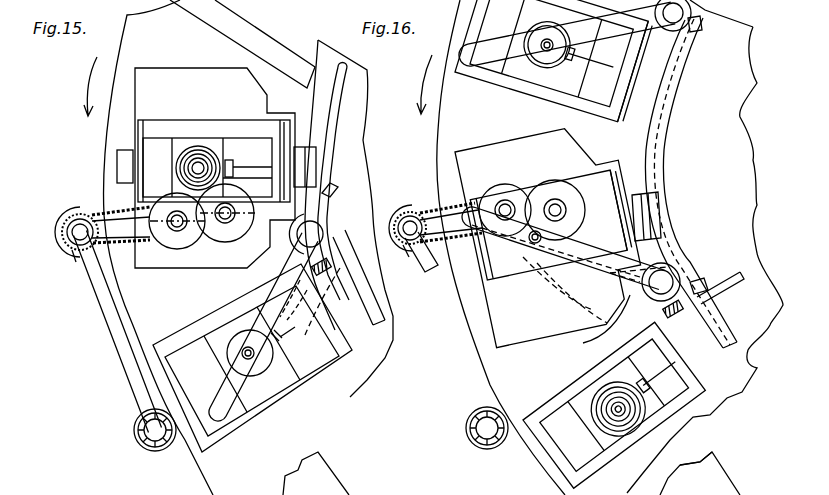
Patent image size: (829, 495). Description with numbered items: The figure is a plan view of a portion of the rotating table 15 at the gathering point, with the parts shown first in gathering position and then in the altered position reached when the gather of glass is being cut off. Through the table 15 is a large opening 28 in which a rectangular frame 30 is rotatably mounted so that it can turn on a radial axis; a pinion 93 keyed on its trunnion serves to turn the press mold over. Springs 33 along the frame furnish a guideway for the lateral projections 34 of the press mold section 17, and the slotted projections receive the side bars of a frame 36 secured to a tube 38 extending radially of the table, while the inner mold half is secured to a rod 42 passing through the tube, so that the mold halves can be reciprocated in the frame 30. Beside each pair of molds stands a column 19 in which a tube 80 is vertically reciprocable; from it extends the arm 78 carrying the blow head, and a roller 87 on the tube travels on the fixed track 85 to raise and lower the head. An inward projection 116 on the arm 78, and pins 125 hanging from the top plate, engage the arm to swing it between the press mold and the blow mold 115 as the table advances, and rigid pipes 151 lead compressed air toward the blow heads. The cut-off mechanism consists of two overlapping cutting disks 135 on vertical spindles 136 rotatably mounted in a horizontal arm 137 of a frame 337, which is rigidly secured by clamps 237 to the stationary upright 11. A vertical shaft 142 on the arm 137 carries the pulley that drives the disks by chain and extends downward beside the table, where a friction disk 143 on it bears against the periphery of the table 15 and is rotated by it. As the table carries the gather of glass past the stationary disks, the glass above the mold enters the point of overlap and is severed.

In FIG. 15, the rigid upright 11 is at (144, 423).
In FIG. 16, the rigid upright 11 is at (470, 422).
In FIG. 15, the table 15 is at (130, 322).
In FIG. 16, the table 15 is at (480, 352).
In FIG. 15, the press mold section 17 is at (218, 150).
In FIG. 16, the column 19 is at (683, 58).
In FIG. 15, the opening 28 is at (165, 75).
In FIG. 16, the opening 28 is at (524, 335).
In FIG. 15, the rectangular frame 30 is at (207, 120).
In FIG. 16, the rectangular frame 30 is at (515, 287).
In FIG. 16, the springs 33 is at (672, 487).
In FIG. 15, the lateral projections 34 is at (210, 150).
In FIG. 16, the lateral projections 34 is at (555, 72).
In FIG. 15, the frame 36 is at (279, 140).
In FIG. 16, the frame 36 is at (608, 195).
In FIG. 15, the tube 38 is at (247, 180).
In FIG. 15, the rod 42 is at (246, 166).
In FIG. 16, the rod 42 is at (592, 65).
In FIG. 15, the arm 78 is at (250, 422).
In FIG. 16, the arm 78 is at (503, 60).
In FIG. 15, the tube 80 is at (298, 252).
In FIG. 16, the tube 80 is at (690, 250).
In FIG. 15, the fixed track 85 is at (327, 130).
In FIG. 16, the fixed track 85 is at (660, 128).
In FIG. 15, the roller 87 is at (322, 217).
In FIG. 16, the roller 87 is at (691, 25).
In FIG. 15, the pinion 93 is at (306, 147).
In FIG. 16, the pinion 93 is at (653, 197).
In FIG. 16, the blow mold 115 is at (572, 72).
In FIG. 15, the inward projection 116 is at (327, 203).
In FIG. 16, the inward projection 116 is at (693, 295).
In FIG. 15, the pins 125 is at (333, 272).
In FIG. 16, the pins 125 is at (610, 337).
In FIG. 15, the cutting disks 135 is at (216, 232).
In FIG. 16, the cutting disks 135 is at (503, 188).
In FIG. 15, the vertical spindles 136 is at (176, 233).
In FIG. 16, the vertical spindles 136 is at (556, 198).
In FIG. 15, the horizontal arm 137 is at (108, 212).
In FIG. 16, the horizontal arm 137 is at (443, 207).
In FIG. 15, the vertical shaft 142 is at (70, 212).
In FIG. 16, the vertical shaft 142 is at (405, 214).
In FIG. 15, the friction disk 143 is at (76, 258).
In FIG. 16, the friction disk 143 is at (422, 270).
In FIG. 15, the rigid pipes 151 is at (359, 270).
In FIG. 16, the rigid pipes 151 is at (725, 288).
In FIG. 15, the clamps 237 is at (135, 440).
In FIG. 16, the clamps 237 is at (466, 437).
In FIG. 15, the frame 337 is at (120, 345).
In FIG. 16, the frame 337 is at (450, 280).